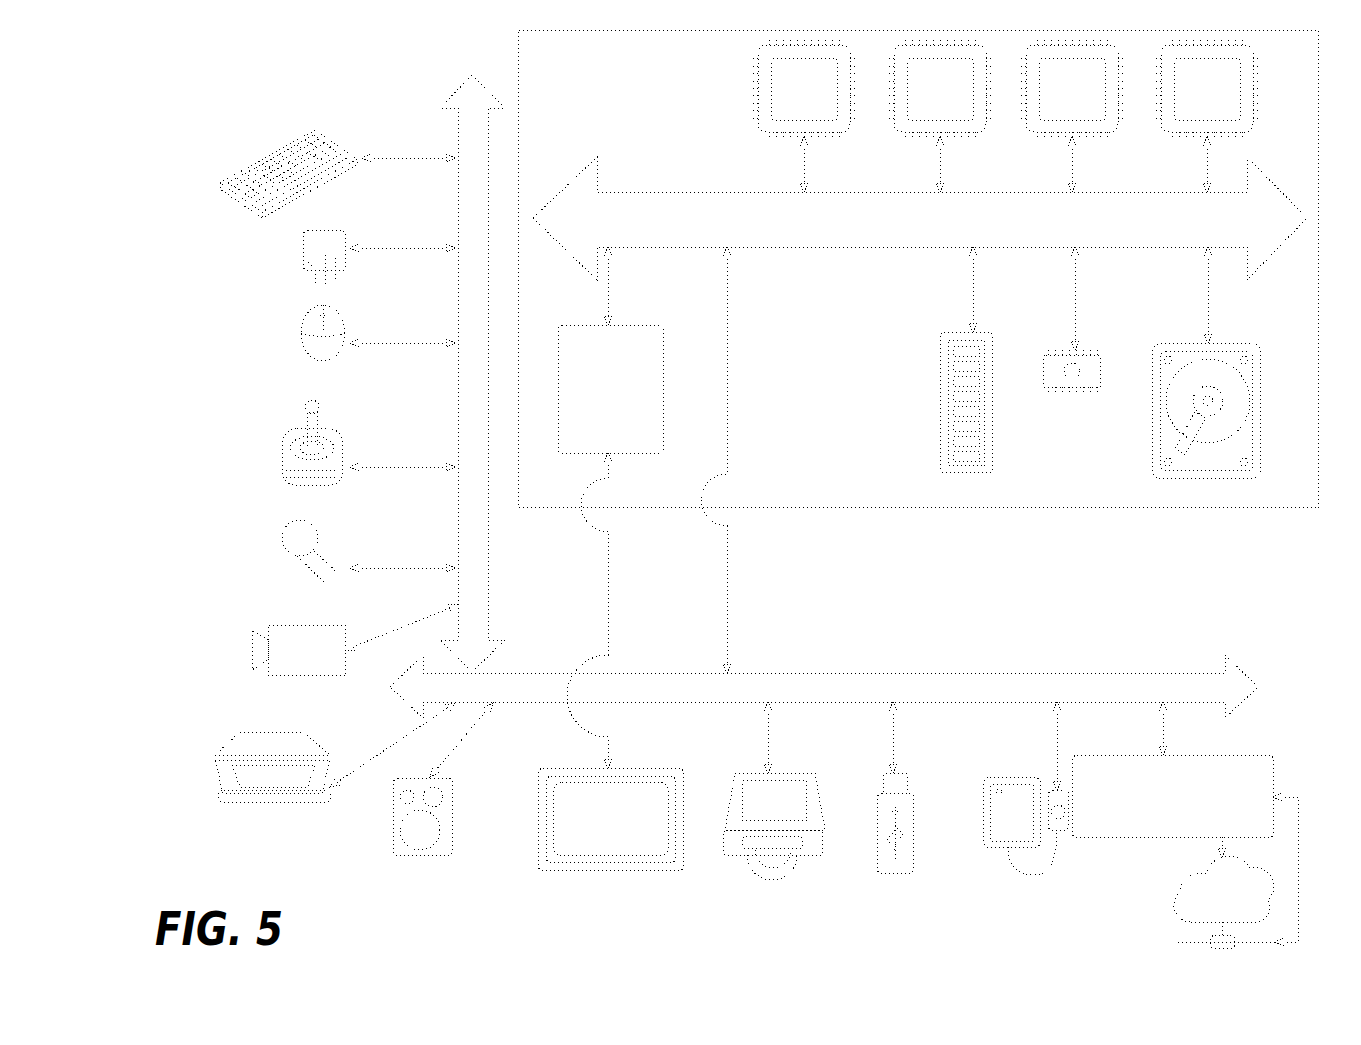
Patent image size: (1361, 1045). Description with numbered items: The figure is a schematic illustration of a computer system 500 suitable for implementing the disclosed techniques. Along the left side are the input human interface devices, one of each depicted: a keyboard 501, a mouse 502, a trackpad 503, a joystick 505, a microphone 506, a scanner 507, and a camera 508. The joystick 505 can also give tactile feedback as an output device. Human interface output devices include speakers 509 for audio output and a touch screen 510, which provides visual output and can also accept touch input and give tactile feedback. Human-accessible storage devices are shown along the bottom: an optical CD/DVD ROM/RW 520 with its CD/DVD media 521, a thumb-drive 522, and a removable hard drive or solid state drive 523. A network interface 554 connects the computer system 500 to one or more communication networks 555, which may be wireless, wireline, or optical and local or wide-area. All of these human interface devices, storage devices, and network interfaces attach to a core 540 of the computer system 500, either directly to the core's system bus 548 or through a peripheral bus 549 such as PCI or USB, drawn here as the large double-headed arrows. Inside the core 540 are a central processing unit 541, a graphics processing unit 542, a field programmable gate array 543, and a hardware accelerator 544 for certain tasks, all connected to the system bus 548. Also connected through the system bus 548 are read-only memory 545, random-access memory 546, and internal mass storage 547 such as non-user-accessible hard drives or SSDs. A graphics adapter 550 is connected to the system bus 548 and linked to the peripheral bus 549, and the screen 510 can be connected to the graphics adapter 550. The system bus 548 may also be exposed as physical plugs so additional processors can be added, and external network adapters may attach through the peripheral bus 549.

The computer system 500 is at (262, 112).
The keyboard 501 is at (220, 183).
The mouse 502 is at (300, 333).
The trackpad 503 is at (300, 250).
The joystick 505 is at (280, 464).
The microphone 506 is at (280, 534).
The scanner 507 is at (222, 790).
The camera 508 is at (248, 652).
The speakers 509 is at (426, 857).
The touch screen 510 is at (608, 872).
The CD/DVD ROM/RW 520 is at (814, 866).
The CD/DVD media 521 is at (752, 868).
The thumb-drive 522 is at (896, 880).
The removable hard drive or solid state drive 523 is at (1000, 845).
The core 540 is at (915, 507).
The central processing unit 541 is at (817, 108).
The graphics processing unit 542 is at (953, 108).
The field programmable gate array 543 is at (1085, 108).
The hardware accelerator 544 is at (1220, 108).
The read-only memory 545 is at (1065, 398).
The random-access memory 546 is at (940, 430).
The internal mass storage 547 is at (1165, 343).
The system bus 548 is at (975, 229).
The peripheral bus 549 is at (455, 118).
The graphics adapter 550 is at (624, 427).
The network interface 554 is at (1185, 821).
The communication network 555 is at (1183, 912).